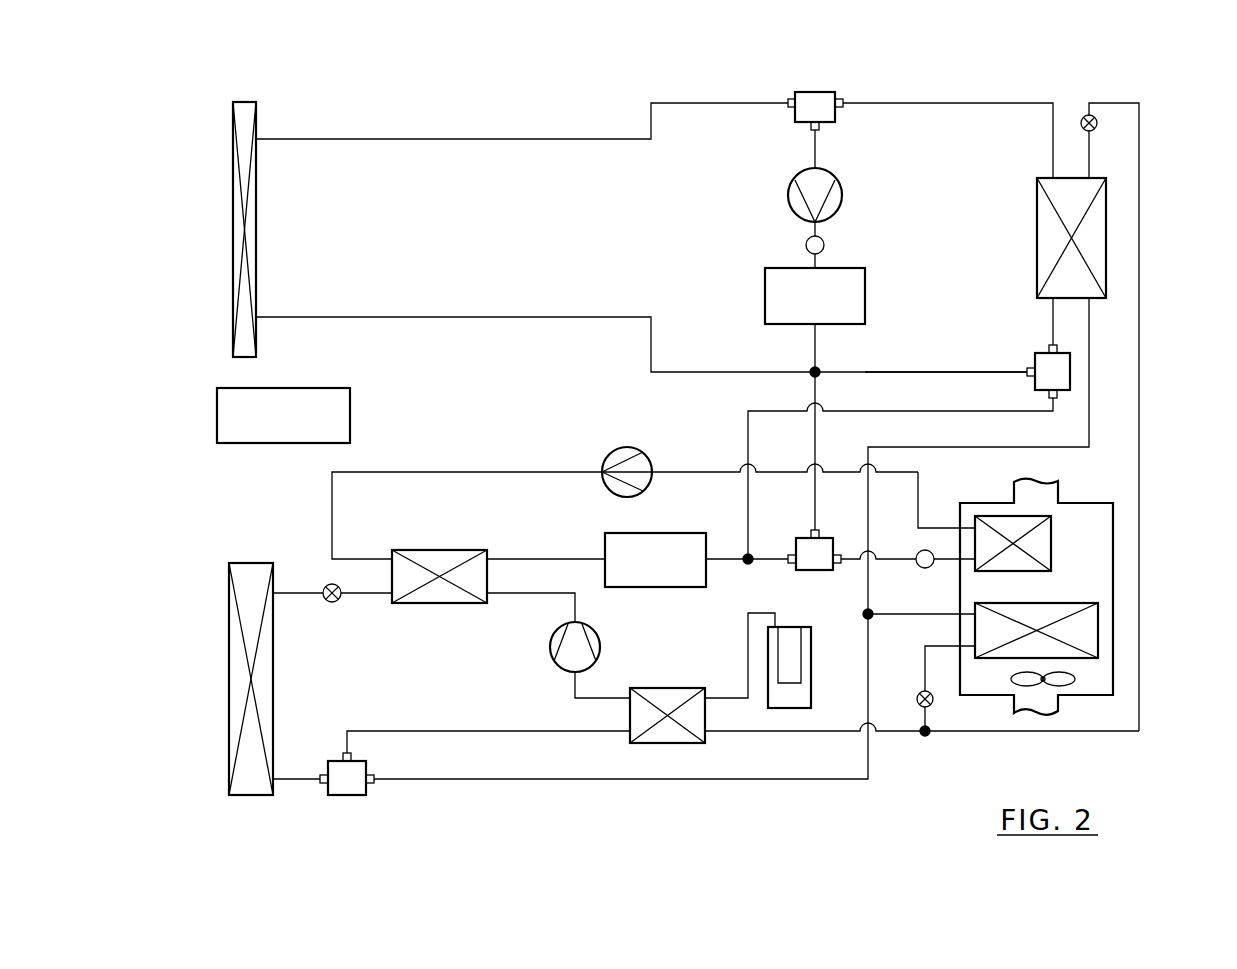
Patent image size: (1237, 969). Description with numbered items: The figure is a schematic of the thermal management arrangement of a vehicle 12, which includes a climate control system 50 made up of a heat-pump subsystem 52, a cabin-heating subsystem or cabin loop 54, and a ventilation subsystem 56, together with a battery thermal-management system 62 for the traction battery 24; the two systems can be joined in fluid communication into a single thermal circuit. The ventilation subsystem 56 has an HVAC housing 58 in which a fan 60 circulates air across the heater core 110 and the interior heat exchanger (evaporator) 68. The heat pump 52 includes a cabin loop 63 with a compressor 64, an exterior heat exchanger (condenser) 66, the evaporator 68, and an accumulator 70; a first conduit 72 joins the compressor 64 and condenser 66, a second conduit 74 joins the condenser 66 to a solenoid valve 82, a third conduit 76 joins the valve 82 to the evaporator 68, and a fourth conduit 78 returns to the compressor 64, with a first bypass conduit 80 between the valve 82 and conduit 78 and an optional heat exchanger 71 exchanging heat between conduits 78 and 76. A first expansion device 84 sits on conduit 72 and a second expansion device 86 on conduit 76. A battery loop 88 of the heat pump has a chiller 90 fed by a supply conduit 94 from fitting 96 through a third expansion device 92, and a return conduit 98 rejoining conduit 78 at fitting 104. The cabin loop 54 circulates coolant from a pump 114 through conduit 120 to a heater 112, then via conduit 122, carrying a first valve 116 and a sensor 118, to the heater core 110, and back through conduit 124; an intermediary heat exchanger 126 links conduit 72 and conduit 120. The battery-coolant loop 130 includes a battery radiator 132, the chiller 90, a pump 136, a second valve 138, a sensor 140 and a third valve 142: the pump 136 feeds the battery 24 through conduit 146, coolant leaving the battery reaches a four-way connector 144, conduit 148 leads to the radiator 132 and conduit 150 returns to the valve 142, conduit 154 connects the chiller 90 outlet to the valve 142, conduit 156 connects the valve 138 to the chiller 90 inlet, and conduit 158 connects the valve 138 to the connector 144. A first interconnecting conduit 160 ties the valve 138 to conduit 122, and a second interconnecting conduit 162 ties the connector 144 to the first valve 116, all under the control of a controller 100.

The vehicle 12 is at (326, 87).
The traction battery 24 is at (867, 295).
The climate control system 50 is at (552, 814).
The heat-pump subsystem 52 is at (716, 812).
The cabin-heating subsystem 54 is at (552, 416).
The ventilation subsystem 56 is at (1104, 464).
The HVAC housing 58 is at (1098, 503).
The fan 60 is at (1012, 700).
The battery thermal-management system 62 is at (880, 78).
The cabin loop 63 is at (290, 534).
The compressor 64 is at (600, 650).
The exterior heat exchanger 66 is at (240, 563).
The interior heat exchanger 68 is at (1099, 627).
The accumulator 70 is at (812, 655).
The heat exchanger 71 is at (678, 688).
The first conduit 72 is at (506, 600).
The second conduit 74 is at (306, 781).
The third conduit 76 is at (418, 731).
The fourth conduit 78 is at (767, 612).
The first bypass conduit 80 is at (441, 781).
The valve 82 is at (350, 796).
The first expansion device 84 is at (331, 603).
The second expansion device 86 is at (933, 708).
The battery loop 88 is at (1175, 172).
The chiller 90 is at (1108, 240).
The third expansion device 92 is at (1082, 118).
The supply conduit 94 is at (1141, 283).
The fitting 96 is at (924, 738).
The return conduit 98 is at (955, 447).
The controller 100 is at (352, 408).
The fitting 104 is at (870, 620).
The heater core 110 is at (1052, 547).
The heater 112 is at (615, 533).
The pump 114 is at (630, 447).
The first valve 116 is at (838, 532).
The sensor 118 is at (917, 553).
The conduit 120 is at (470, 472).
The conduit 122 is at (868, 600).
The conduit 124 is at (920, 490).
The intermediary heat exchanger 126 is at (440, 550).
The battery-coolant loop 130 is at (521, 246).
The battery radiator 132 is at (240, 102).
The pump 136 is at (843, 191).
The second valve 138 is at (1030, 362).
The sensor 140 is at (806, 245).
The third valve 142 is at (806, 92).
The four-way connector 144 is at (820, 368).
The conduit 146 is at (818, 142).
The conduit 148 is at (371, 317).
The conduit 150 is at (371, 139).
The conduit 154 is at (1005, 103).
The conduit 156 is at (1051, 320).
The conduit 158 is at (934, 372).
The first interconnecting conduit 160 is at (950, 411).
The second interconnecting conduit 162 is at (812, 505).